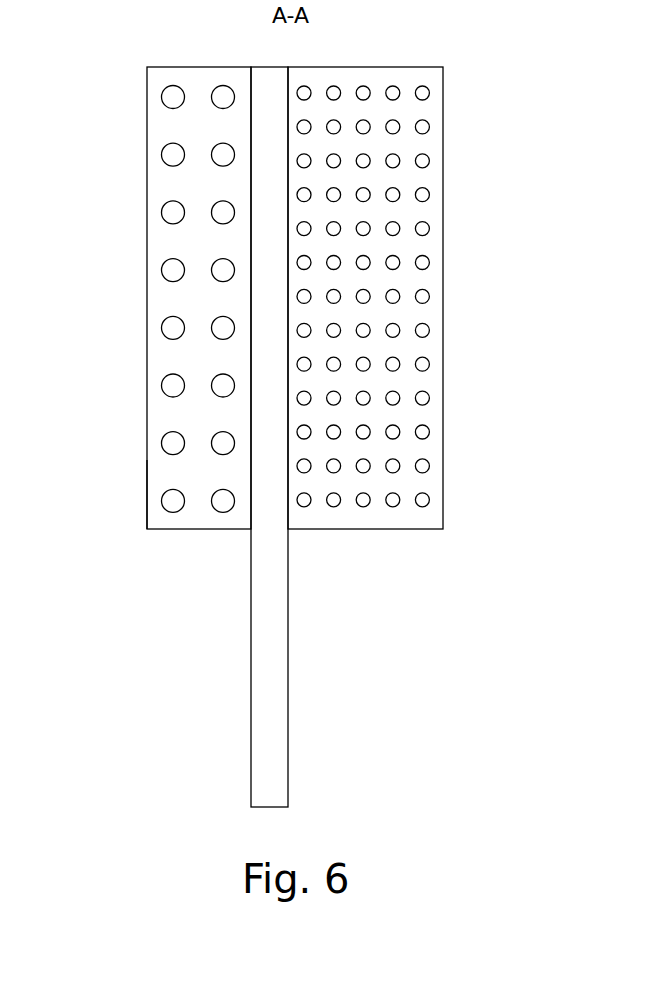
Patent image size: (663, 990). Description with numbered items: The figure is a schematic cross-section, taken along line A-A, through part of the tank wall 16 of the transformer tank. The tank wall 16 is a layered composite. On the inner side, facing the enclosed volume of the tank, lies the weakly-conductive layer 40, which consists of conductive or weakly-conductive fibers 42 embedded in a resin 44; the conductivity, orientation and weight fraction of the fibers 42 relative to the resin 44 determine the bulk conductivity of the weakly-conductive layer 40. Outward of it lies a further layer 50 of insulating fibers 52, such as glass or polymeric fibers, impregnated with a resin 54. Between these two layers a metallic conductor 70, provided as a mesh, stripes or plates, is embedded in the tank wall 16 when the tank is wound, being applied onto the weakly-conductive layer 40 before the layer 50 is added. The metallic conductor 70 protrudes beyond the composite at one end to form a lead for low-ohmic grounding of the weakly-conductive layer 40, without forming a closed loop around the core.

The tank wall 16 is at (92, 67).
The weakly-conductive layer 40 is at (140, 317).
The conductive or weakly-conductive fibers 42 is at (163, 387).
The resin 44 is at (153, 475).
The layer of insulating fibers 50 is at (443, 278).
The insulating fibers 52 is at (430, 123).
The resin 54 is at (433, 447).
The metallic conductor 70 is at (258, 584).